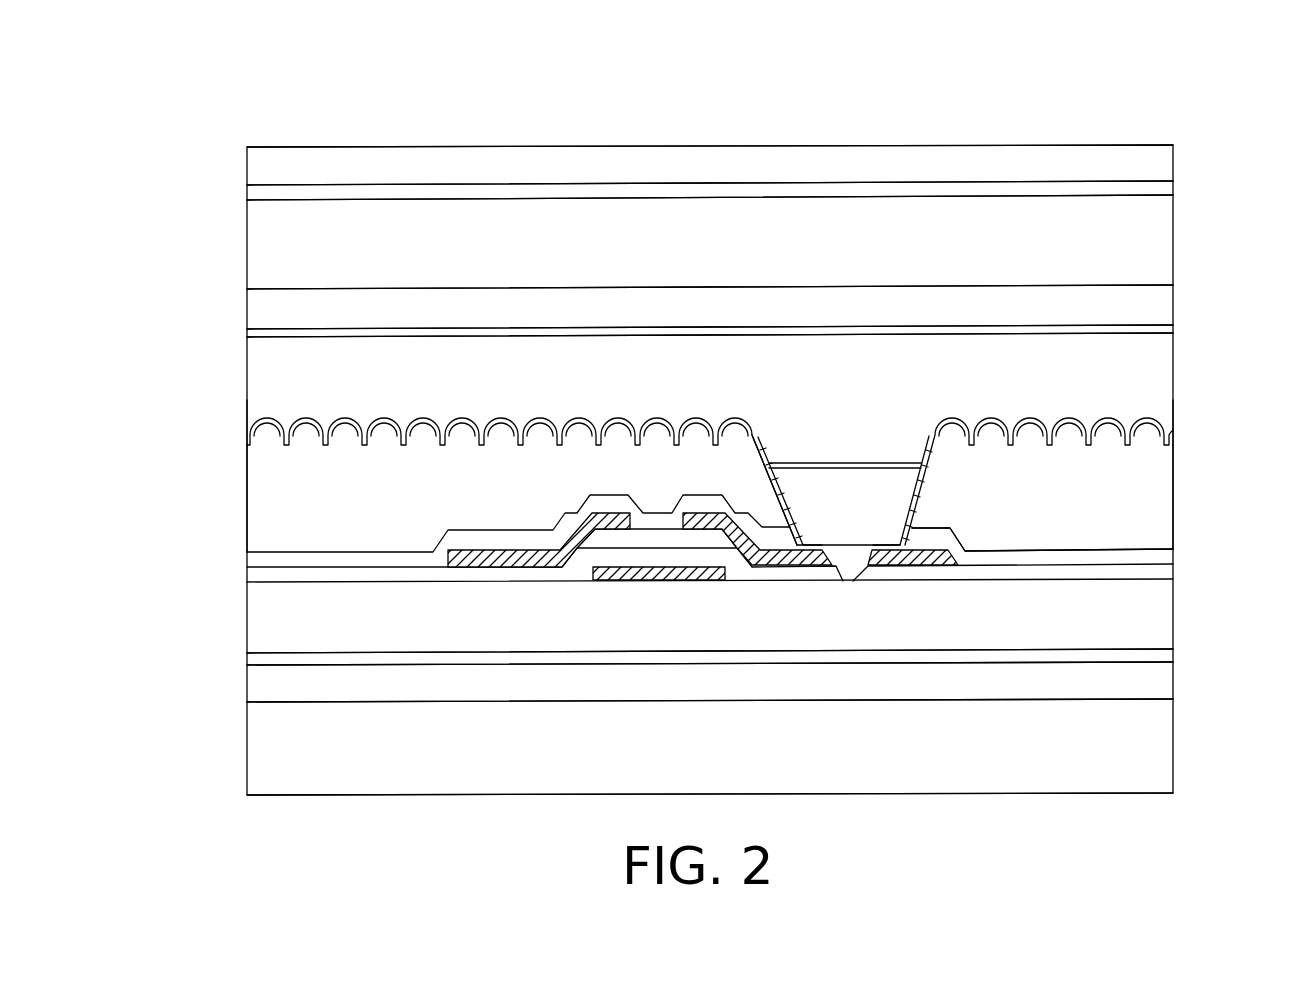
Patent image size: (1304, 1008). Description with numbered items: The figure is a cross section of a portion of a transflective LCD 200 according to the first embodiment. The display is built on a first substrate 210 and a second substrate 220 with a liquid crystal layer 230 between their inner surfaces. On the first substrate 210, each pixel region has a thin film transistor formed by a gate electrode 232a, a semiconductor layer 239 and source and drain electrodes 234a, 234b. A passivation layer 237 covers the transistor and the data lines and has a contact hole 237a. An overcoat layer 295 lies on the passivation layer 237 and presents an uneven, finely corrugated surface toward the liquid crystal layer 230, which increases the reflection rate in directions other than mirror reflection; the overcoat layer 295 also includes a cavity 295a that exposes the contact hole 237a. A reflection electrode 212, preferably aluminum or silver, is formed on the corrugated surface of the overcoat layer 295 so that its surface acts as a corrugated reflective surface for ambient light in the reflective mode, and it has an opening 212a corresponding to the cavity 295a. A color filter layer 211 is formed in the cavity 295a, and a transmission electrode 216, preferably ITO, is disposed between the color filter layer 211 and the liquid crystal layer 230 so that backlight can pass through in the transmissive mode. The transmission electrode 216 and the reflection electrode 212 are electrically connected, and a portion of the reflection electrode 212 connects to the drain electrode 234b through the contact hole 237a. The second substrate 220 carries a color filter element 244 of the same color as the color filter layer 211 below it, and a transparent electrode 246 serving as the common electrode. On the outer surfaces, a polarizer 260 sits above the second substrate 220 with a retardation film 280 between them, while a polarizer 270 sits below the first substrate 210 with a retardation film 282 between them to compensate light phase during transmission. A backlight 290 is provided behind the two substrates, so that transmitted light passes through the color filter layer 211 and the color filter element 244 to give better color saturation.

The transflective LCD 200 is at (112, 105).
The first substrate 210 is at (262, 621).
The color filter layer 211 is at (822, 508).
The reflection electrode 212 is at (1135, 413).
The opening 212a is at (818, 545).
The transmission electrode 216 is at (844, 467).
The second substrate 220 is at (259, 236).
The liquid crystal layer 230 is at (262, 367).
The gate electrode 232a is at (700, 572).
The source electrode 234a is at (503, 560).
The drain electrode 234b is at (791, 549).
The passivation layer 237 is at (1168, 559).
The contact hole 237a is at (948, 534).
The semiconductor layer 239 is at (636, 537).
The color filter element 244 is at (830, 300).
The transparent electrode 246 is at (1165, 331).
The polarizer 260 is at (1082, 162).
The polarizer 270 is at (1163, 680).
The retardation film 280 is at (1165, 189).
The retardation film 282 is at (1163, 655).
The backlight 290 is at (1163, 755).
The overcoat layer 295 is at (261, 496).
The cavity 295a is at (760, 452).